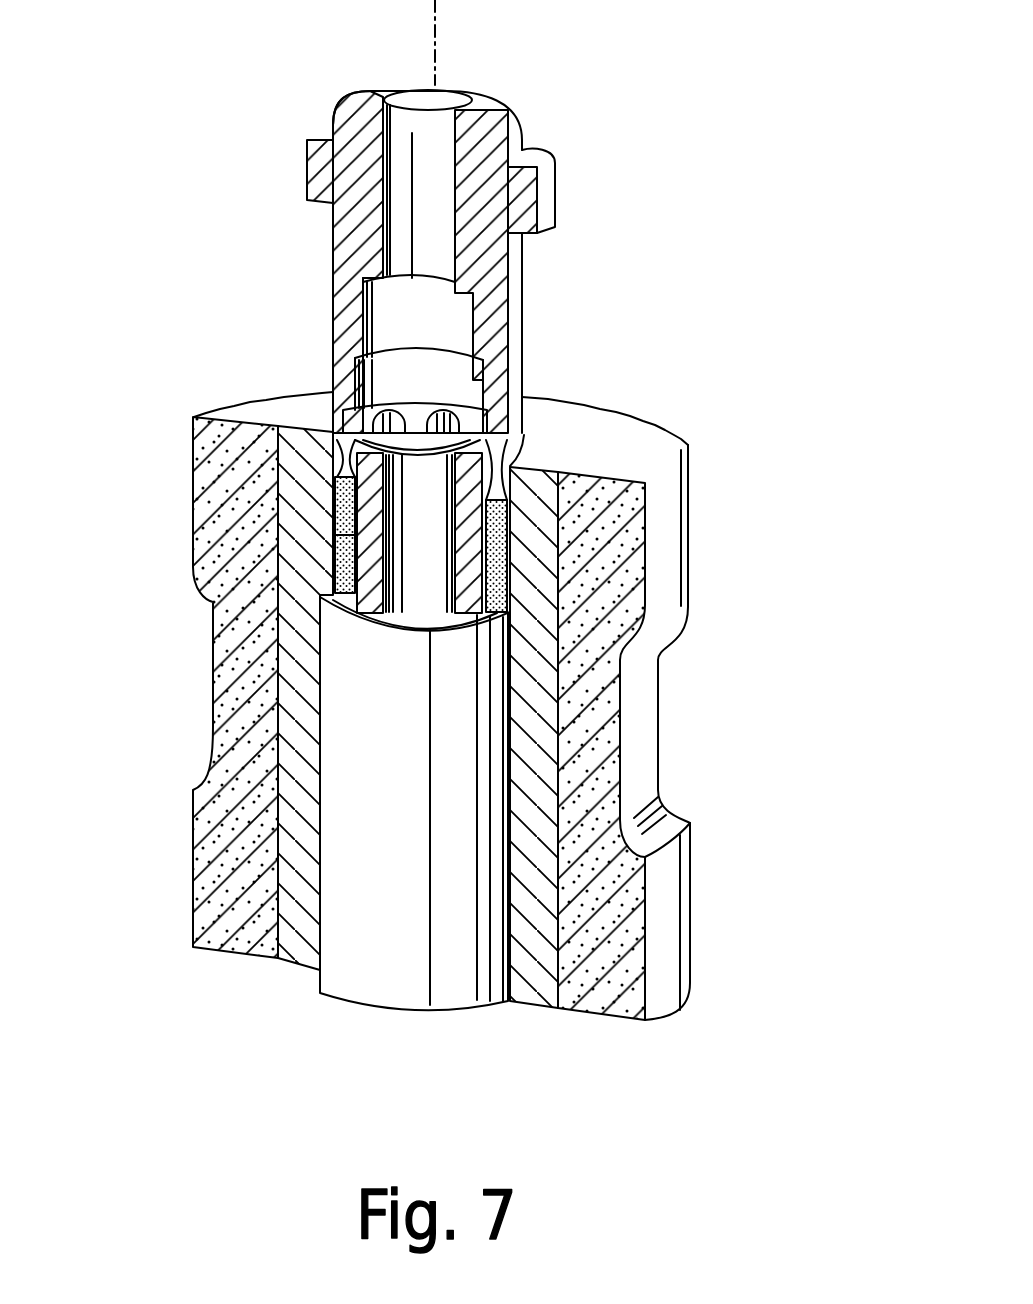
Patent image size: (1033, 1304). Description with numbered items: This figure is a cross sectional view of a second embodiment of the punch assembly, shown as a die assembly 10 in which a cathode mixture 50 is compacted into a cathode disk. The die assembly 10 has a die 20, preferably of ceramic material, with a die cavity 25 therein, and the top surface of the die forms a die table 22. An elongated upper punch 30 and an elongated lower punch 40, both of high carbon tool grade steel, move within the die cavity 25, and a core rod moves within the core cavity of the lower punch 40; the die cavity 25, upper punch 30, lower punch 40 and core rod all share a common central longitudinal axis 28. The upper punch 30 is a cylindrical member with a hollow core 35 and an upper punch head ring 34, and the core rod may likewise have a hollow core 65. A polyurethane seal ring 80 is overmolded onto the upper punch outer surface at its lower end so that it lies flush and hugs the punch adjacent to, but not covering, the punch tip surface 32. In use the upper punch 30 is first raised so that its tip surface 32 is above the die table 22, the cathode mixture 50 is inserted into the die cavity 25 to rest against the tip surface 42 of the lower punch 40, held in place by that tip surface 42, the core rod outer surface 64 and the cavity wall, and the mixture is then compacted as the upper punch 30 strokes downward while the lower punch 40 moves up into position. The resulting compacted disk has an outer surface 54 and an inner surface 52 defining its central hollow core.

The die assembly 10 is at (190, 282).
The die 20 is at (688, 510).
The die table 22 is at (627, 433).
The die cavity 25 is at (513, 537).
The central longitudinal axis 28 is at (433, 33).
The upper punch 30 is at (520, 110).
The upper punch tip surface 32 is at (333, 515).
The upper punch head ring 34 is at (550, 198).
The hollow core of upper punch 35 is at (453, 92).
The lower punch 40 is at (337, 763).
The lower punch tip surface 42 is at (337, 593).
The cathode mixture 50 is at (333, 480).
The inner surface of cathode disk 52 is at (335, 575).
The outer surface of cathode disk 54 is at (510, 573).
The core rod outer surface 64 is at (428, 585).
The hollow core of core rod 65 is at (413, 500).
The seal ring 80 is at (505, 447).